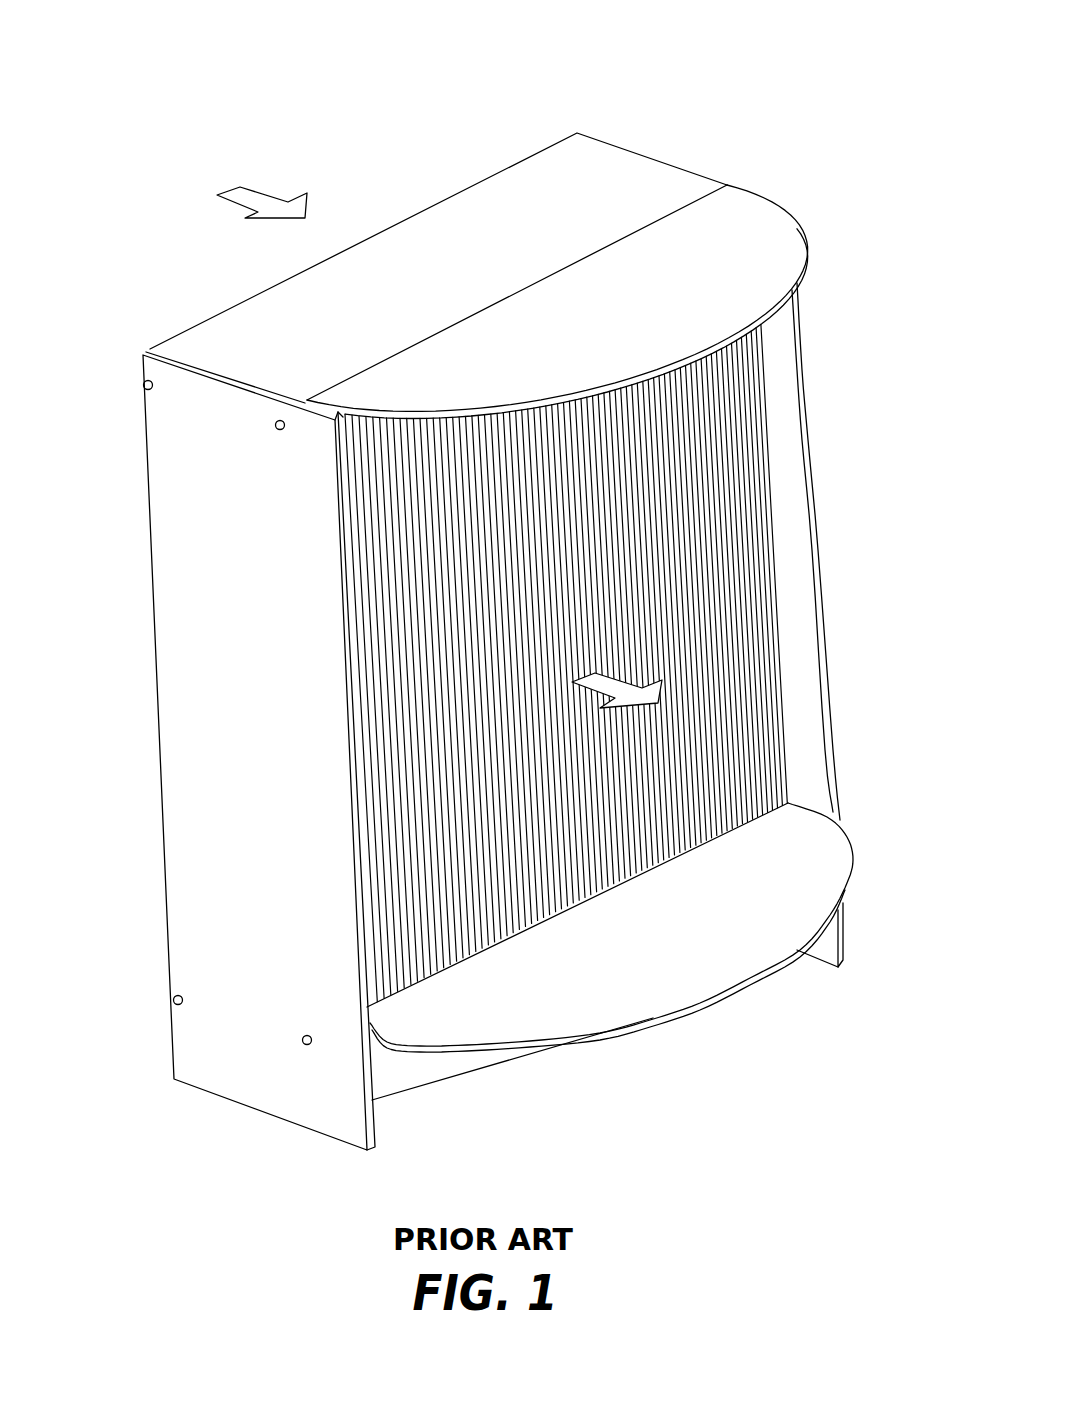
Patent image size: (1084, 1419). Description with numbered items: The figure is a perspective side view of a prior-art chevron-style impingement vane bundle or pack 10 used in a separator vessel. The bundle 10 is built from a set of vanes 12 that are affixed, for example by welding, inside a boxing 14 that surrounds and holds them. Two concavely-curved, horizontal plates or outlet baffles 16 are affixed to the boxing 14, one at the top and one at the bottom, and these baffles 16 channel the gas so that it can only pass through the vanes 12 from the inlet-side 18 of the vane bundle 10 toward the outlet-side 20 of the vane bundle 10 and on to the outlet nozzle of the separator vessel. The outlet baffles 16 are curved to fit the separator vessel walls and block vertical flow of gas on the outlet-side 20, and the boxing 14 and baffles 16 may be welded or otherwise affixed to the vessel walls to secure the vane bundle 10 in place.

The chevron-style impingement vane bundle 10 is at (753, 47).
The vanes 12 is at (697, 490).
The boxing 14 is at (274, 718).
The outlet baffles 16 is at (740, 223).
The inlet-side 18 is at (165, 295).
The outlet-side 20 is at (826, 535).